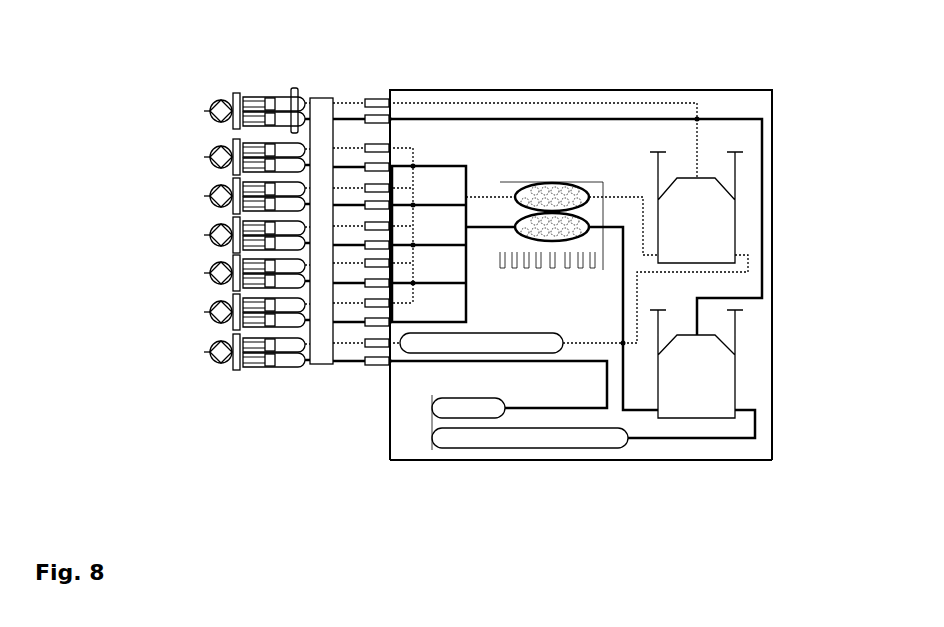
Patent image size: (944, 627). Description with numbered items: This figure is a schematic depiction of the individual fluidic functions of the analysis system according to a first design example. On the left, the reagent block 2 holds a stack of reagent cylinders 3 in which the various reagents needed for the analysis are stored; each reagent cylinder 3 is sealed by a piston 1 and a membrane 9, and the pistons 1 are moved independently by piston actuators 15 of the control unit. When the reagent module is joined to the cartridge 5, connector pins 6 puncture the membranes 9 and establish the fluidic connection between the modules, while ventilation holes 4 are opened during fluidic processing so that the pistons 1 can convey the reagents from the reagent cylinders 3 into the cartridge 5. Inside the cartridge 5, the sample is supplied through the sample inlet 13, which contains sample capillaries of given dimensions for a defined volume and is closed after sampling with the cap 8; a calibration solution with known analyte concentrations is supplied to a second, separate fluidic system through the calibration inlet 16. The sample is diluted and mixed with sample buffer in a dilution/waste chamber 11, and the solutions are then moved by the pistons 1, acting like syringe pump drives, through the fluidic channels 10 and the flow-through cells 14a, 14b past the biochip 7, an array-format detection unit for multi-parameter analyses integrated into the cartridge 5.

The piston 1 is at (253, 98).
The reagent block 2 is at (332, 87).
The reagent cylinder 3 is at (292, 357).
The ventilation hole 4 is at (293, 88).
The cartridge 5 is at (742, 87).
The connector pin 6 is at (373, 357).
The biochip 7 is at (584, 205).
The cap 8 is at (384, 440).
The membrane 9 is at (322, 358).
The fluidic channels 10 is at (762, 180).
The dilution/waste chamber 11 is at (727, 373).
The sample inlet 13 is at (520, 443).
The flow-through cell A 14a is at (567, 188).
The flow-through cell B 14b is at (588, 232).
The piston actuators 15 is at (213, 360).
The calibration inlet 16 is at (550, 347).